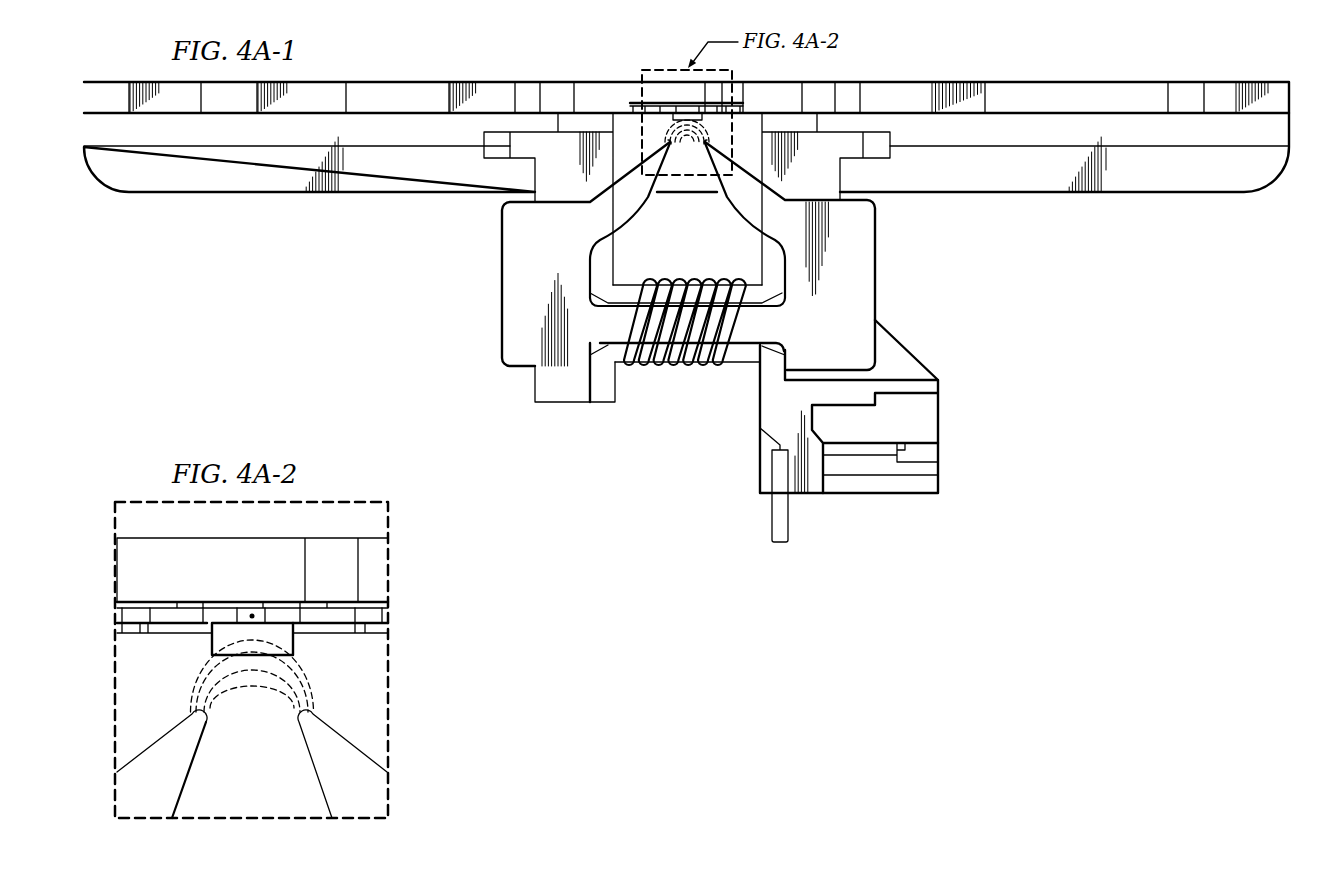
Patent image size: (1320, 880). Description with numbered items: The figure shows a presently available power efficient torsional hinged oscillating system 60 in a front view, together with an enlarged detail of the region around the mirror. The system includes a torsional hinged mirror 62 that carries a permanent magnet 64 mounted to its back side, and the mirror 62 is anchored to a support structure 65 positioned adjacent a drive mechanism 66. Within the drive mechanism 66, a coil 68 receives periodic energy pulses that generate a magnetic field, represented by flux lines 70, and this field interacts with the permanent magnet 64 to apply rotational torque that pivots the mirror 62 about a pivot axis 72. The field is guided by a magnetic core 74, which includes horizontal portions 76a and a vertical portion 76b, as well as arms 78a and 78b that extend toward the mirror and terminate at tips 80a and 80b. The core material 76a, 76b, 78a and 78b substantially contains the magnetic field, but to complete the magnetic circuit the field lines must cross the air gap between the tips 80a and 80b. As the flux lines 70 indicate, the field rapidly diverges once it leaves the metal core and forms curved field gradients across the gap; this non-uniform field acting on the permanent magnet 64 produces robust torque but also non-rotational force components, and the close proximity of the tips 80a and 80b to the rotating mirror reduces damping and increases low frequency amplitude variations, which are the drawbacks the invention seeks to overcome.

In FIG. 4A-1, the torsional hinged oscillating system 60 is at (1024, 49).
In FIG. 4A-1, the support structure 65 is at (430, 80).
In FIG. 4A-1, the drive mechanism 66 is at (478, 296).
In FIG. 4A-1, the magnetic core 74 is at (494, 343).
In FIG. 4A-1, the horizontal portions of the core 76a is at (748, 332).
In FIG. 4A-1, the vertical portion of the core 76b is at (513, 234).
In FIG. 4A-1, the coil 68 is at (690, 368).
In FIG. 4A-1, the arm 78a is at (620, 200).
In FIG. 4A-2, the arm 78a is at (175, 730).
In FIG. 4A-1, the arm 78b is at (752, 200).
In FIG. 4A-2, the arm 78b is at (340, 730).
In FIG. 4A-2, the torsional hinged mirror 62 is at (222, 603).
In FIG. 4A-2, the pivot axis 72 is at (252, 614).
In FIG. 4A-2, the permanent magnet 64 is at (294, 644).
In FIG. 4A-2, the flux lines 70 is at (195, 682).
In FIG. 4A-2, the tip 80a is at (207, 727).
In FIG. 4A-2, the tip 80b is at (293, 727).